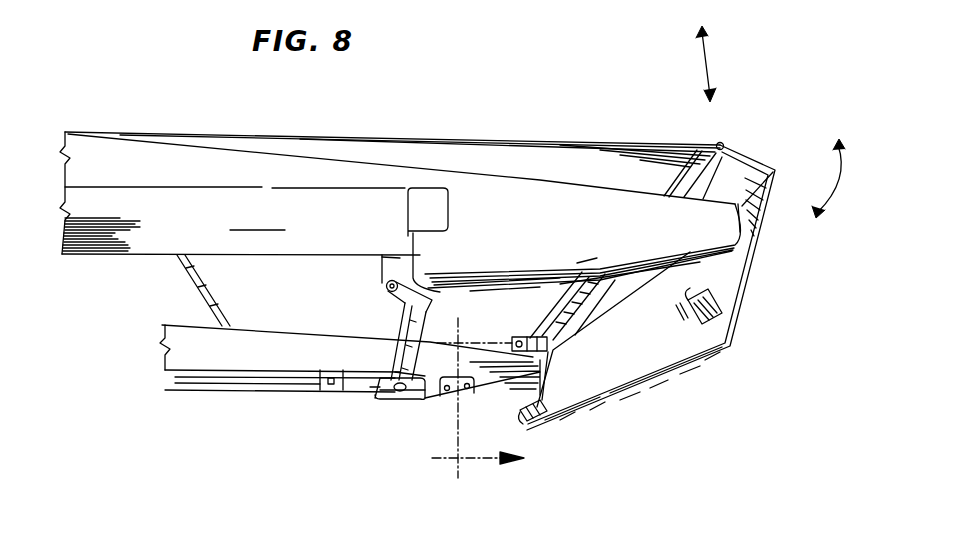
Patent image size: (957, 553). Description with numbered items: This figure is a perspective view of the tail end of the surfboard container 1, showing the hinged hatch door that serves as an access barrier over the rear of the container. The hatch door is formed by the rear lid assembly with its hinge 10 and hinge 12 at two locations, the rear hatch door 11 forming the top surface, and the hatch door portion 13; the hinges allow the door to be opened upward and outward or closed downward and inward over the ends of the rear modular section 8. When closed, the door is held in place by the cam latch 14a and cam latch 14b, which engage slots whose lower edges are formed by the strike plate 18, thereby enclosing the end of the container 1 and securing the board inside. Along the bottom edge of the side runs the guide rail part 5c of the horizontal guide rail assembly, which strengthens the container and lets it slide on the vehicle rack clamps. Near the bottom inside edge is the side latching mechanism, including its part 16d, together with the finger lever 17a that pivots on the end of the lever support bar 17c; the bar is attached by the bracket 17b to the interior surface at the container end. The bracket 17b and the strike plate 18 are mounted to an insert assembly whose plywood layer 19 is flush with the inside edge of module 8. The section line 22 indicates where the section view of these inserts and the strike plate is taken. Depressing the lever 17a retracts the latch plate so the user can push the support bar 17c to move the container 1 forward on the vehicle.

The surfboard container 1 is at (213, 110).
The hinge 10 is at (125, 132).
The rear hatch door 11 is at (459, 126).
The hinge 12 is at (722, 140).
The hatch door 13 is at (740, 277).
The cam latch 14a is at (718, 300).
The cam latch 14b is at (520, 410).
The rear modular section 8 is at (76, 173).
The guide rail part 5c is at (122, 243).
The latching mechanism part 16d is at (222, 390).
The finger lever 17a is at (391, 293).
The bracket 17b is at (368, 380).
The lever support bar 17c is at (424, 406).
The strike plate 18 is at (455, 412).
The plywood layer 19 is at (492, 384).
The section line 22 is at (495, 463).